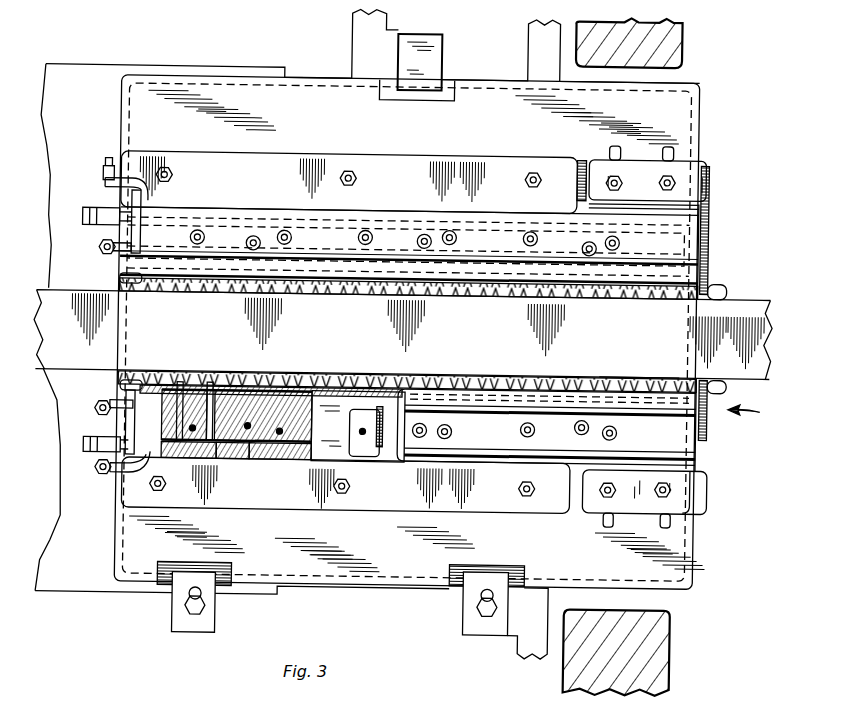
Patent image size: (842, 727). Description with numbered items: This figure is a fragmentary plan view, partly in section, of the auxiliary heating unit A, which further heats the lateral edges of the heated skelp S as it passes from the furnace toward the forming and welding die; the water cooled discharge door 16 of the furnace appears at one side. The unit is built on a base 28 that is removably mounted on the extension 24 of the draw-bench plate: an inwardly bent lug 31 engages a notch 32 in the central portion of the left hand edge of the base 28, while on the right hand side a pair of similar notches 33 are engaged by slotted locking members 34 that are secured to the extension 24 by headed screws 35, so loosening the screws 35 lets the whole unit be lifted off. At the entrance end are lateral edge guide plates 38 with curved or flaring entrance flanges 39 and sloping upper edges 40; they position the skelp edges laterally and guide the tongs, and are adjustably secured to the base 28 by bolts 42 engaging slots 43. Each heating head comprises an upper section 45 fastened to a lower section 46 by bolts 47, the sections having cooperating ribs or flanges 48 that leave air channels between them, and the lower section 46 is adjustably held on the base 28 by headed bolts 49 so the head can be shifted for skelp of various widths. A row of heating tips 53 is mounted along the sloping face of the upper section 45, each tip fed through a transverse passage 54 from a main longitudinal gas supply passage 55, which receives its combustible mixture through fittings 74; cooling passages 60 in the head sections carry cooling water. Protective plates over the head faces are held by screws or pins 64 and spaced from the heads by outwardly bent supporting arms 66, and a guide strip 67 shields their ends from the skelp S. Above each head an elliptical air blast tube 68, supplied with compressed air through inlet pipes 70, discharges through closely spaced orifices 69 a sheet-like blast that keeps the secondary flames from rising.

The water cooled discharge door 16 is at (679, 40).
The extension of the draw-bench plate 24 is at (100, 76).
The base 28 is at (327, 93).
The inwardly bent lug 31 is at (430, 56).
The notch 32 is at (384, 90).
The notches 33 is at (236, 576).
The slotted locking members 34 is at (219, 624).
The headed screws 35 is at (209, 608).
The lateral edge guide plates 38 is at (708, 196).
The curved or flaring entrance flanges 39 is at (727, 286).
The sloping upper edges 40 is at (709, 258).
The bolts 42 is at (661, 178).
The slots 43 is at (664, 143).
The upper section 45 is at (377, 212).
The lower section 46 is at (305, 160).
The bolts 47 is at (358, 232).
The ribs or flanges 48 is at (370, 450).
The headed bolts 49 is at (166, 170).
The heating tips 53 is at (211, 385).
The transverse passage 54 is at (182, 420).
The main longitudinal gas supply passage 55 is at (204, 461).
The cooling passages 60 is at (107, 169).
The screws or pins 64 is at (254, 238).
The outwardly bent supporting arms 66 is at (614, 374).
The guide strip 67 is at (134, 288).
The air blast tubes 68 is at (316, 278).
The orifices 69 is at (181, 385).
The inlet pipes 70 is at (143, 221).
The fittings 74 is at (83, 216).
The skelp S is at (767, 295).
The auxiliary heating unit A is at (750, 413).